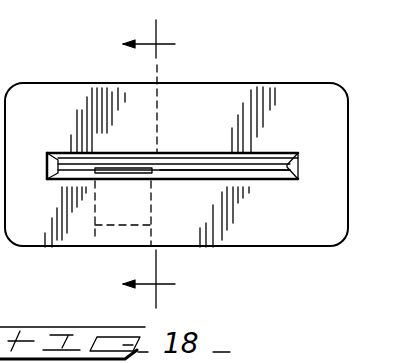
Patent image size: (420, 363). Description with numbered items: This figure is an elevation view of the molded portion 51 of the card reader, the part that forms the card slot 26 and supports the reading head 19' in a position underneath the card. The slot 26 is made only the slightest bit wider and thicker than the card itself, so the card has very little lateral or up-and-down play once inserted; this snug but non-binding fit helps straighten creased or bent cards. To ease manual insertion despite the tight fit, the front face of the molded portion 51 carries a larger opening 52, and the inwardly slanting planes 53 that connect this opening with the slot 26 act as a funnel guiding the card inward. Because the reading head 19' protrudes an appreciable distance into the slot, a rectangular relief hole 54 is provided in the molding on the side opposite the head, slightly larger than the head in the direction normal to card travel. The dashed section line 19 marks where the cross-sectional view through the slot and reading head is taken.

The molded portion 51 is at (369, 112).
The opening 52 is at (188, 152).
The inwardly slanting planes 53 is at (296, 181).
The rectangular relief hole 54 is at (106, 83).
The slot 26 is at (266, 168).
The section line 19 is at (164, 164).
The reading head 19' is at (149, 213).